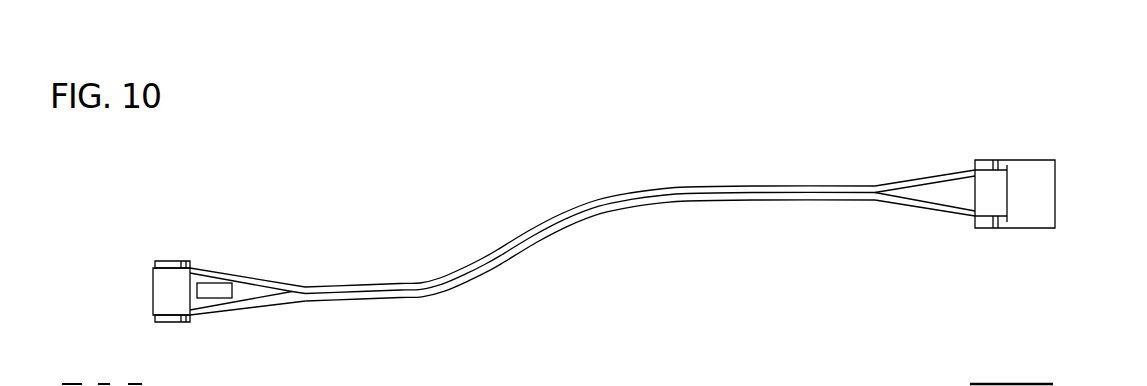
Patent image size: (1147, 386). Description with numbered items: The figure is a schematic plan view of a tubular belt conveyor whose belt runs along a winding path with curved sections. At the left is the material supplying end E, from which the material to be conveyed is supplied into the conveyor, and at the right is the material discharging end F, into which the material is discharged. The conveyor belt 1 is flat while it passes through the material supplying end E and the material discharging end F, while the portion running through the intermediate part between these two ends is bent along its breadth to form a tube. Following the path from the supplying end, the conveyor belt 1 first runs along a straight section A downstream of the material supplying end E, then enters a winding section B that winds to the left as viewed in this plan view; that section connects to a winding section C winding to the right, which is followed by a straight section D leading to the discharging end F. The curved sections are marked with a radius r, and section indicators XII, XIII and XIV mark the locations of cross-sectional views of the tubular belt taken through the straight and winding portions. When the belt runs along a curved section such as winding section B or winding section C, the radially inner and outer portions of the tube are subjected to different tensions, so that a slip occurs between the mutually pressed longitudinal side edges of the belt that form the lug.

The conveyor belt 1 is at (544, 216).
The straight section A is at (353, 302).
The winding section B is at (484, 284).
The winding section C is at (612, 219).
The straight section D is at (758, 205).
The material supplying end E is at (217, 290).
The material discharging end F is at (1057, 192).
The bend radius r is at (400, 140).
The section XII indicator XII is at (343, 277).
The section XIII indicator XIII is at (445, 262).
The section XIV indicator XIV is at (607, 190).